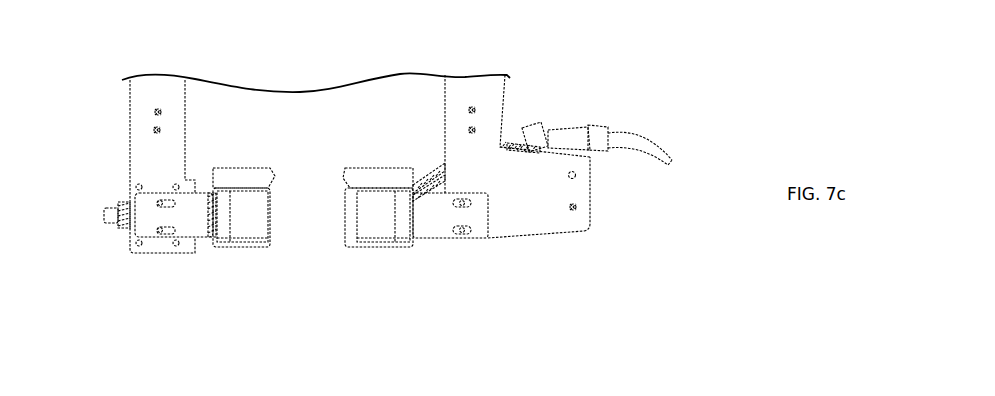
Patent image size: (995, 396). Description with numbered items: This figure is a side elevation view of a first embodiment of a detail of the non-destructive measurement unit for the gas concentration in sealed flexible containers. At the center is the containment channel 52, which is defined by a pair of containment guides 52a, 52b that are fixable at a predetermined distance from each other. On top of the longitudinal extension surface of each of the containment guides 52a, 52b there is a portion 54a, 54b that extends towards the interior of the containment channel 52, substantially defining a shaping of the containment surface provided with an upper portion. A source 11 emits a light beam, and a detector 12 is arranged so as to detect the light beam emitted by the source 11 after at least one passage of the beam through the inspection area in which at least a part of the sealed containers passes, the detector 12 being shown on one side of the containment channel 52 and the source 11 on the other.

The source 11 is at (530, 122).
The detector 12 is at (110, 207).
The containment channel 52 is at (318, 225).
The containment guide 52a is at (378, 222).
The containment guide 52b is at (245, 222).
The portion 54a is at (348, 181).
The portion 54b is at (267, 184).